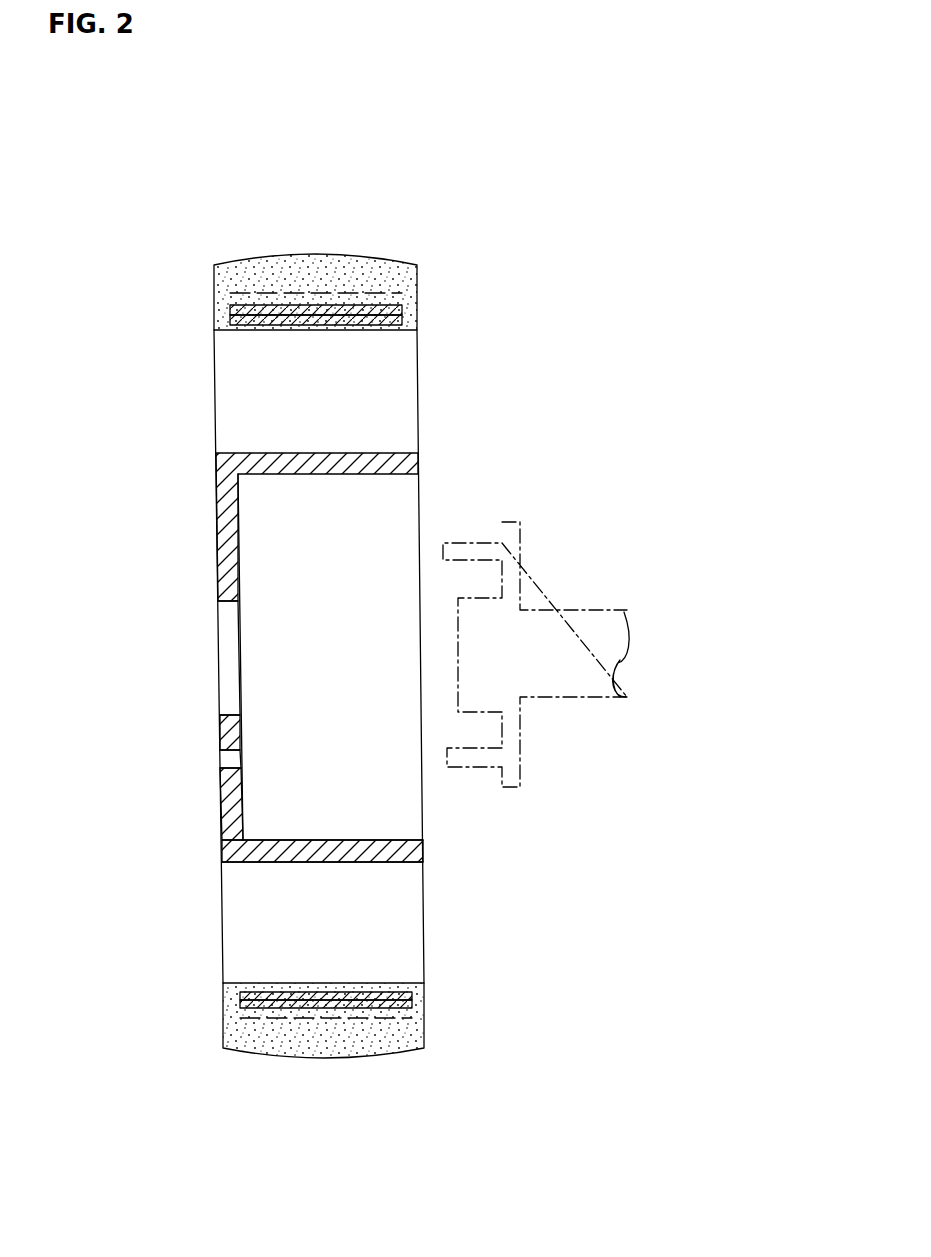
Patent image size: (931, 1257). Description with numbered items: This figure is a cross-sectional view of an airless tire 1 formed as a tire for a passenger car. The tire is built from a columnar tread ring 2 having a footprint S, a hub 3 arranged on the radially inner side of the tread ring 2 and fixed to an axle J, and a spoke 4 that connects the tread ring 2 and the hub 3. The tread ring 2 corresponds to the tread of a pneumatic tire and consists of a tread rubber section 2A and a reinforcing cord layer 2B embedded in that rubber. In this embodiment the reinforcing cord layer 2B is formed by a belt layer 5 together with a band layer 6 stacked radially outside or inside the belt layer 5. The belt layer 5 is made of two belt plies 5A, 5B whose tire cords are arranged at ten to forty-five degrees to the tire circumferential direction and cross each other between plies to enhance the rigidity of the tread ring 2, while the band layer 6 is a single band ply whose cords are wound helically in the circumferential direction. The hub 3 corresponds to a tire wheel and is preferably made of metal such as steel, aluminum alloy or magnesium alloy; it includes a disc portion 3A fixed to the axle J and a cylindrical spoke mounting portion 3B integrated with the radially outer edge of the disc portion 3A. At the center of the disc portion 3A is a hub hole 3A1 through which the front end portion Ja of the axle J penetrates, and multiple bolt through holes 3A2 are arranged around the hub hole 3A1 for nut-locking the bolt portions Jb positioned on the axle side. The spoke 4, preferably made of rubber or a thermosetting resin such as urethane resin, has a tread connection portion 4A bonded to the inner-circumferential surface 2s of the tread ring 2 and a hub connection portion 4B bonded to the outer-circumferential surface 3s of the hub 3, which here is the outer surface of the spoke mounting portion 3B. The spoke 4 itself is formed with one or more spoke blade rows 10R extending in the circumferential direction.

The airless tire 1 is at (413, 210).
The tread ring 2 is at (274, 228).
The tread rubber section 2A is at (330, 270).
The footprint S is at (284, 253).
The reinforcing cord layer 2B is at (435, 281).
The belt layer 5 is at (404, 312).
The belt ply 5A is at (400, 330).
The belt ply 5B is at (400, 303).
The band layer 6 is at (415, 260).
The spoke 4 is at (215, 386).
The spoke blade row 10R is at (398, 395).
The hub 3 is at (234, 698).
The disc portion 3A is at (248, 668).
The hub hole 3A1 is at (226, 606).
The bolt through holes 3A2 is at (228, 758).
The spoke mounting portion 3B is at (300, 862).
The hub connection portion 4B is at (365, 834).
The outer-circumferential surface 3s is at (393, 853).
The inner-circumferential surface 2s is at (347, 982).
The tread connection portion 4A is at (400, 1008).
The axle J is at (536, 679).
The front end portion Ja is at (480, 713).
The bolt portions Jb is at (485, 767).